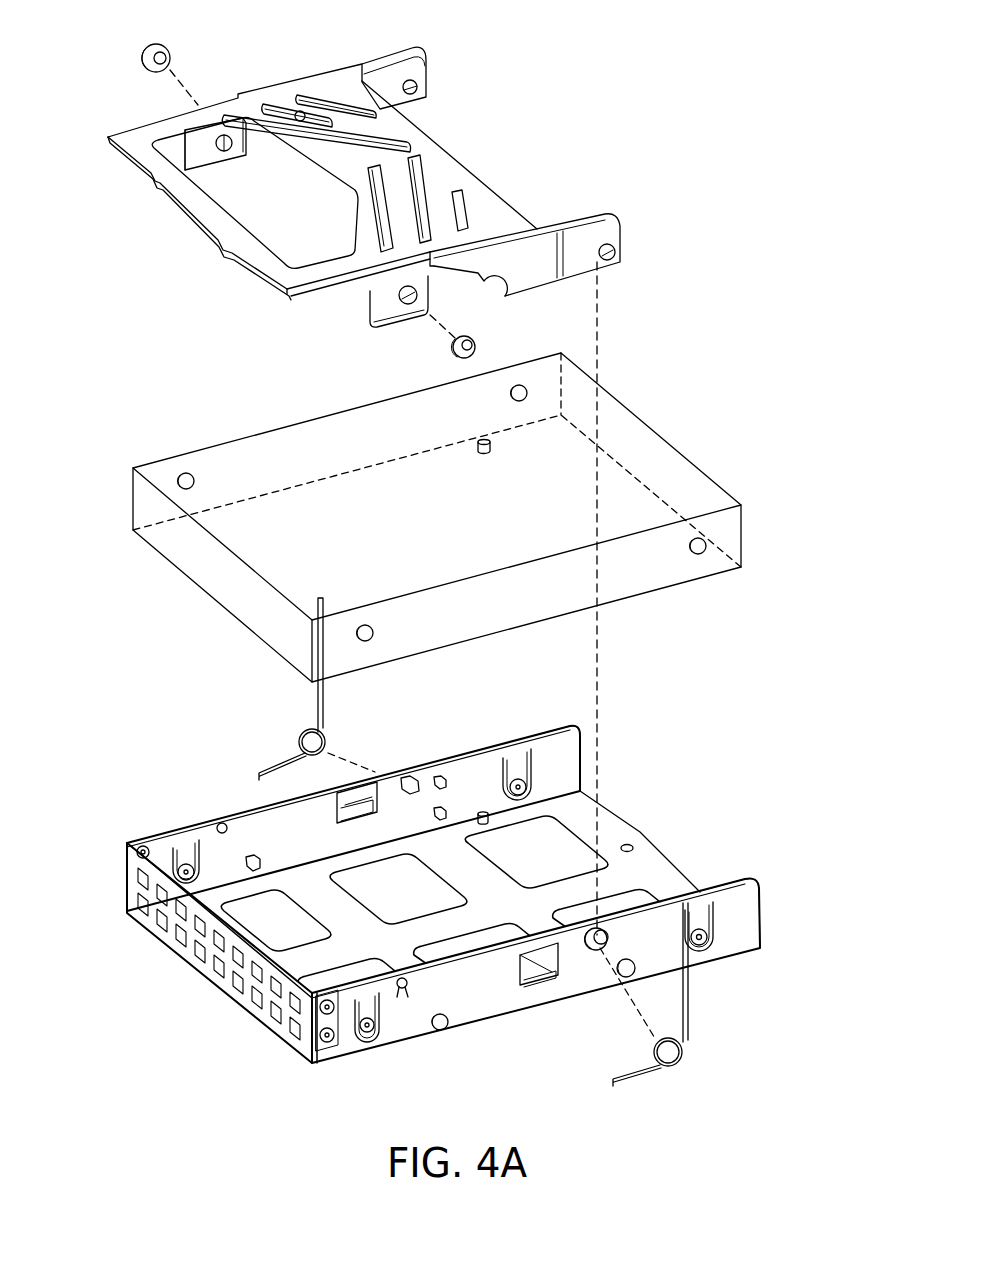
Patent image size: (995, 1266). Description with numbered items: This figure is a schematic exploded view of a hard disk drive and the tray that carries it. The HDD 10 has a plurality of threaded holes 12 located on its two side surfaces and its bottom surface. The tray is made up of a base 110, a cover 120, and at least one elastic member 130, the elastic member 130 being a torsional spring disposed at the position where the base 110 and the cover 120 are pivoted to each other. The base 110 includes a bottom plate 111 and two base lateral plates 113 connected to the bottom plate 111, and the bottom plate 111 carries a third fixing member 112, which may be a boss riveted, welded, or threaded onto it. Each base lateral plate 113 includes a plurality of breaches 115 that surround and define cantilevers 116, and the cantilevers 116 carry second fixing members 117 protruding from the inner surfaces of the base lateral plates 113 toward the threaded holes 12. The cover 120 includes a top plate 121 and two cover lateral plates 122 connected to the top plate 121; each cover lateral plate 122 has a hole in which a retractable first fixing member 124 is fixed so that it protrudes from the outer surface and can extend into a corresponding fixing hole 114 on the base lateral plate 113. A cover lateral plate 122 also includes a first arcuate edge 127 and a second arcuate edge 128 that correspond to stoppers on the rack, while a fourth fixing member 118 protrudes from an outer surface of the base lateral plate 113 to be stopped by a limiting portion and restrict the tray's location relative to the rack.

The HDD 10 is at (618, 408).
The threaded holes 12 is at (490, 452).
The base 110 is at (200, 1026).
The bottom plate 111 is at (610, 838).
The third fixing member 112 is at (489, 818).
The base lateral plates 113 is at (571, 757).
The fixing hole 114 is at (220, 822).
The breaches 115 is at (720, 920).
The cantilevers 116 is at (698, 922).
The second fixing members 117 is at (517, 778).
The fourth fixing member 118 is at (628, 976).
The cover 120 is at (163, 241).
The top plate 121 is at (440, 167).
The cover lateral plates 122 is at (425, 52).
The first fixing member 124 is at (452, 348).
The first arcuate edge 127 is at (620, 210).
The second arcuate edge 128 is at (476, 288).
The elastic member 130 is at (330, 742).